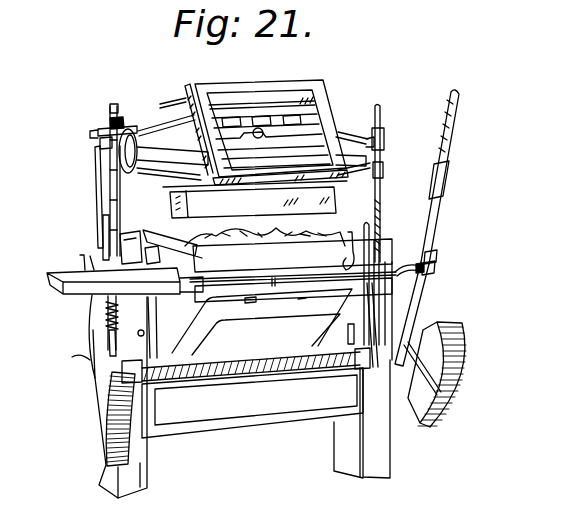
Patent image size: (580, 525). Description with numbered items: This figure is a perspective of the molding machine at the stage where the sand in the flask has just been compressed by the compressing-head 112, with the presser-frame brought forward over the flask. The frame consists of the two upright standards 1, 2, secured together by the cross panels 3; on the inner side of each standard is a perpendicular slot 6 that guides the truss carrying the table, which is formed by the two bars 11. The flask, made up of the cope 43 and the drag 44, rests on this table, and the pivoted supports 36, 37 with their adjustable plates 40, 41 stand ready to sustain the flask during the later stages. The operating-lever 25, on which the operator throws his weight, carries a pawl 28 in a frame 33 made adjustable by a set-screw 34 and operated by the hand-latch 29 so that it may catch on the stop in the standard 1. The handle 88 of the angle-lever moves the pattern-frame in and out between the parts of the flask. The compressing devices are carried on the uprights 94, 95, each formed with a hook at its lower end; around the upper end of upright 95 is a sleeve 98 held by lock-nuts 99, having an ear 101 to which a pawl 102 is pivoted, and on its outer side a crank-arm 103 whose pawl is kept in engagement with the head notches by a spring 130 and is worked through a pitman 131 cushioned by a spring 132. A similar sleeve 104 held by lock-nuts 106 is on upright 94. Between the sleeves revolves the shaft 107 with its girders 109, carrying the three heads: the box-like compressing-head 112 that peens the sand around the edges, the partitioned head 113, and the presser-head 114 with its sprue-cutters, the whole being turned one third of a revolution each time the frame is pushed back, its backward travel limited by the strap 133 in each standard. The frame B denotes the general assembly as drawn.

The upright standard 1 is at (382, 440).
The upright standard 2 is at (87, 327).
The cross panel 3 is at (252, 423).
The perpendicular slot 6 is at (352, 330).
The table bar 11 is at (246, 304).
The frame B is at (262, 335).
The operating-lever 25 is at (431, 234).
The pawl 28 is at (402, 270).
The hand-latch 29 is at (448, 174).
The frame 33 is at (430, 260).
The set-screw 34 is at (433, 264).
The pivoted support 36 is at (123, 234).
The pivoted support 37 is at (376, 245).
The plate 40 is at (147, 239).
The plate 41 is at (350, 232).
The cope 43 is at (293, 290).
The drag 44 is at (293, 262).
The handle 88 is at (427, 272).
The upright 94 is at (382, 192).
The upright 95 is at (105, 223).
The sleeve 98 is at (100, 144).
The lock-nuts 99 is at (110, 124).
The ear 101 is at (133, 130).
The pawl 102 is at (158, 103).
The crank-arm 103 is at (99, 133).
The sleeve 104 is at (384, 138).
The lock-nuts 106 is at (384, 171).
The shaft 107 is at (160, 155).
The girders 109 is at (160, 129).
The compressing-head 112 is at (255, 199).
The compressing-head 113 is at (240, 84).
The presser-head 114 is at (197, 87).
The spring 130 is at (117, 120).
The pitman 131 is at (97, 201).
The spring 132 is at (104, 312).
The strap 133 is at (90, 258).